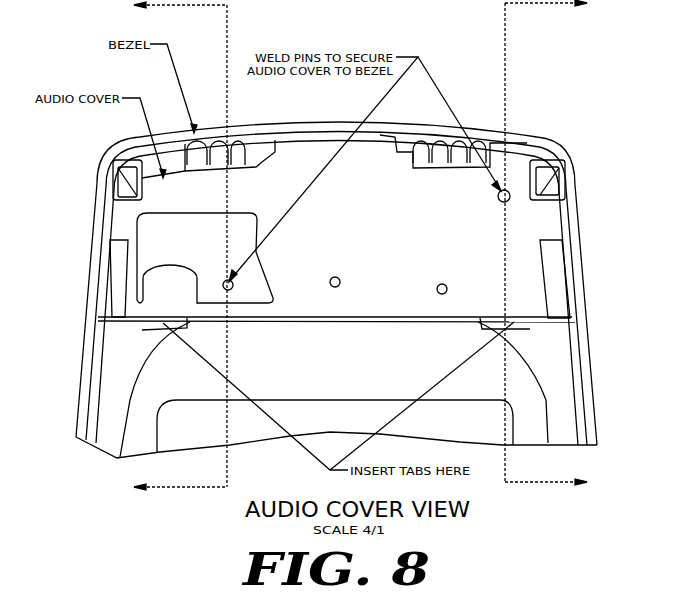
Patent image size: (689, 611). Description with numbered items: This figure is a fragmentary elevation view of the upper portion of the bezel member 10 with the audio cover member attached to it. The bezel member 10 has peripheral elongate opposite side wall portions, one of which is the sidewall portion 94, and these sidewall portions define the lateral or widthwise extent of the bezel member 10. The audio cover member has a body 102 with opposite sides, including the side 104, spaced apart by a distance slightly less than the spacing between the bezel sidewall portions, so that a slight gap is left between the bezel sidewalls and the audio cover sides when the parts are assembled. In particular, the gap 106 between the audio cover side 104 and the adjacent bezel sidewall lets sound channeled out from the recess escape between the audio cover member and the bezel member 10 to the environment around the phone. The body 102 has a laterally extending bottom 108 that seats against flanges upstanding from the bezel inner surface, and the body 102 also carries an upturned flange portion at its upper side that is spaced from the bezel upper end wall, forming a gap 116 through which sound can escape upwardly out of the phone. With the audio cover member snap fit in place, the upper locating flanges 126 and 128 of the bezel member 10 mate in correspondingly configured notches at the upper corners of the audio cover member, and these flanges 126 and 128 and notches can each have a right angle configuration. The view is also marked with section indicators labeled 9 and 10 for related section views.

The sidewall portion 94 is at (86, 289).
The body 102 is at (100, 221).
The side 104 is at (561, 221).
The gap 106 is at (567, 256).
The bottom 108 is at (586, 318).
The gap 116 is at (308, 133).
The upper locating flange 126 is at (118, 178).
The upper locating flange 128 is at (548, 177).
The section line 9- 9 is at (163, 250).
The bezel member 10 is at (569, 247).